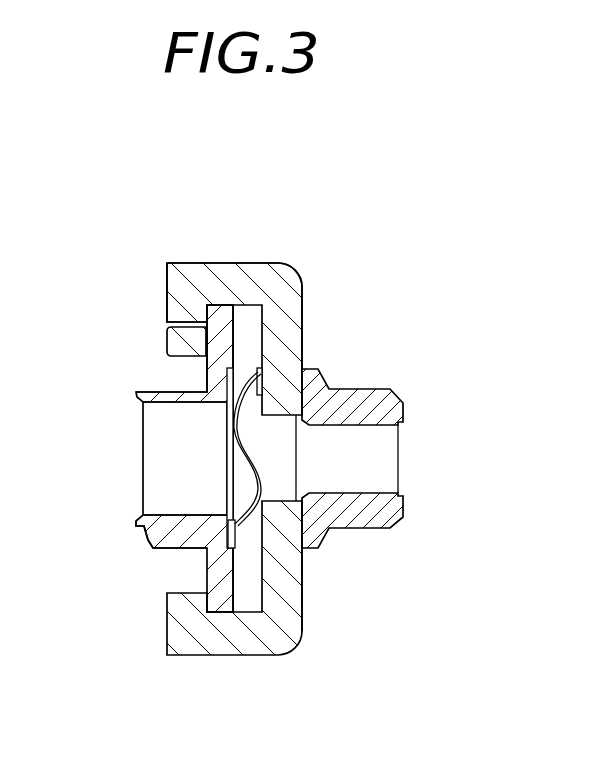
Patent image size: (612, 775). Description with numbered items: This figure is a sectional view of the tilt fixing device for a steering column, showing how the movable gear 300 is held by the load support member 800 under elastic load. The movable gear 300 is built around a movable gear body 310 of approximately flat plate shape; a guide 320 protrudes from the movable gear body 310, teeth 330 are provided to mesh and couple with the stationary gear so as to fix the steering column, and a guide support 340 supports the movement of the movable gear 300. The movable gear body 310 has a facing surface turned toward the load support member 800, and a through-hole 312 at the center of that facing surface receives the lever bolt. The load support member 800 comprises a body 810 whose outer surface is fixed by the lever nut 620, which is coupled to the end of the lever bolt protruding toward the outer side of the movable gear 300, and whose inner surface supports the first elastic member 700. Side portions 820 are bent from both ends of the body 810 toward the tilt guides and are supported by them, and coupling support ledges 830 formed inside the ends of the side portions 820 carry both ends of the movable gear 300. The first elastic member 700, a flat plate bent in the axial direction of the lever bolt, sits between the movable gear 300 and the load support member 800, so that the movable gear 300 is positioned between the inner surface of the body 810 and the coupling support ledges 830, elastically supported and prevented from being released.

The movable gear 300 is at (115, 528).
The movable gear body 310 is at (222, 580).
The through-hole 312 is at (163, 408).
The guide 320 is at (178, 392).
The teeth 330 is at (168, 550).
The guide support 340 is at (195, 343).
The lever nut 620 is at (370, 510).
The first elastic member 700 is at (250, 524).
The load support member 800 is at (268, 682).
The body 810 is at (287, 336).
The side portions 820 is at (231, 276).
The coupling support ledges 830 is at (200, 316).